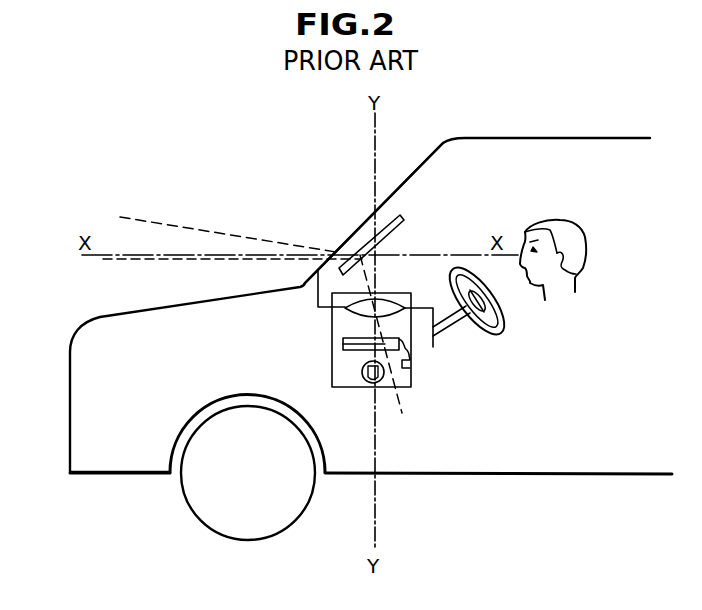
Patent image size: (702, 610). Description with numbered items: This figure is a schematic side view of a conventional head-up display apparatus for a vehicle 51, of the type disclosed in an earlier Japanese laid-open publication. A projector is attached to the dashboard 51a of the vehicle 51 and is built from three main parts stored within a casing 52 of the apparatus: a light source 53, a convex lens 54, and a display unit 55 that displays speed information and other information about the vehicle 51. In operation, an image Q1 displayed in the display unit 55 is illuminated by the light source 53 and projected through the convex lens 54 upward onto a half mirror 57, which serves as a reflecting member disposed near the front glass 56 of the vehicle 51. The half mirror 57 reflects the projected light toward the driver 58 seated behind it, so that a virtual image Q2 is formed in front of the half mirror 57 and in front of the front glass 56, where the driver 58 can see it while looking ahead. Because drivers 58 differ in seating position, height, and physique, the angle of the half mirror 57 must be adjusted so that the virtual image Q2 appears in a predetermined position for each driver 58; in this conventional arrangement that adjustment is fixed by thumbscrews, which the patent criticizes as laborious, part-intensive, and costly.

The vehicle 51 is at (87, 332).
The dashboard 51a is at (426, 308).
The casing 52 is at (330, 368).
The light source 53 is at (368, 370).
The convex lens 54 is at (388, 300).
The display unit 55 is at (343, 343).
The front glass 56 is at (432, 158).
The half mirror 57 is at (388, 225).
The driver 58 is at (582, 242).
The image Q1 is at (390, 368).
The virtual image Q2 is at (142, 220).